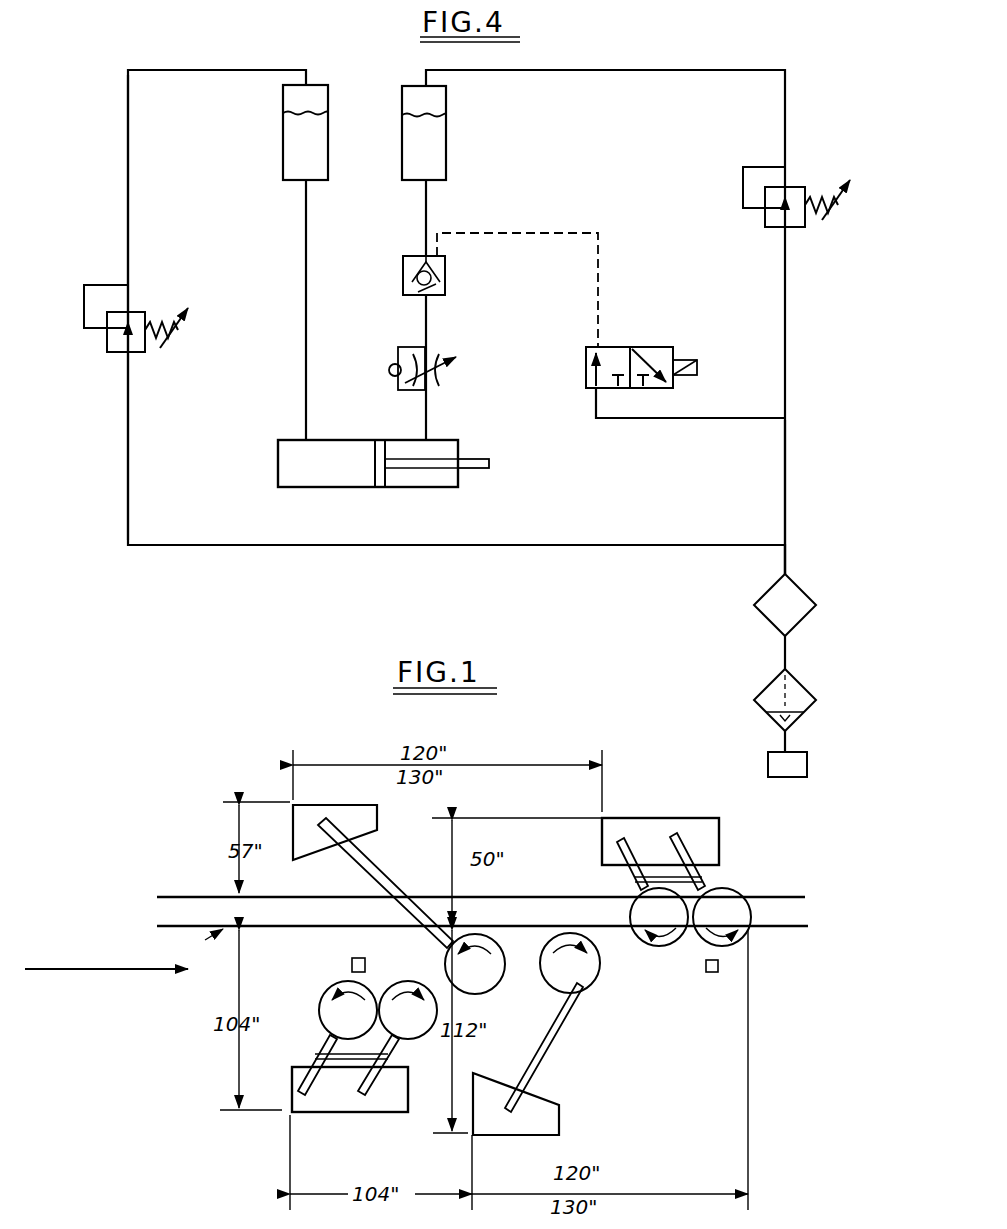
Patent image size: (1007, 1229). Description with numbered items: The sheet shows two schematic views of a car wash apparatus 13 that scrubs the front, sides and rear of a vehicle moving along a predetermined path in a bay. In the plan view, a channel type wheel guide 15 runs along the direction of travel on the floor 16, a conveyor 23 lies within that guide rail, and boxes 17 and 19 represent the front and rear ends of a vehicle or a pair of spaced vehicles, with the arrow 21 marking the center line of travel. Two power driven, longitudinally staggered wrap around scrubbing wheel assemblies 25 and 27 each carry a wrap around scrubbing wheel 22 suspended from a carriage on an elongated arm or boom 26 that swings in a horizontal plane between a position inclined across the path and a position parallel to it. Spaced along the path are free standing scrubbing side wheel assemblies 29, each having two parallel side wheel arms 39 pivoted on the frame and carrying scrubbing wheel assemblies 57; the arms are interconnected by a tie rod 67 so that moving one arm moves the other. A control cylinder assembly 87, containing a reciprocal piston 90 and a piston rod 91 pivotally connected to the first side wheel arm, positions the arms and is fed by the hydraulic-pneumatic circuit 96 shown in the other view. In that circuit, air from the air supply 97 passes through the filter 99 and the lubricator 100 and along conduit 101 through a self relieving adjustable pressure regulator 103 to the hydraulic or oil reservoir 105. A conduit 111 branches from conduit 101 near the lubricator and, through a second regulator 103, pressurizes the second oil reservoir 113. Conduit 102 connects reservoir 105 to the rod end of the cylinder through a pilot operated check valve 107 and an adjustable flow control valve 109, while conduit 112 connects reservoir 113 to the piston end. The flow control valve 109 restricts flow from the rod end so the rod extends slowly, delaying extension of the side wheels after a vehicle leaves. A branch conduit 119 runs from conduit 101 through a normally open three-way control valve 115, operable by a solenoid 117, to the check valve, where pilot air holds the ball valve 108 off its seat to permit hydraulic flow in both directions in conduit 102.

In FIG. 1, the car wash apparatus 13 is at (220, 810).
In FIG. 1, the wheel guide 15 is at (200, 896).
In FIG. 1, the floor 16 is at (205, 851).
In FIG. 1, the vehicle end box 17 is at (716, 995).
In FIG. 1, the vehicle end box 19 is at (352, 965).
In FIG. 1, the arrow 21 is at (185, 983).
In FIG. 1, the wrap around scrubbing wheel 22 is at (483, 985).
In FIG. 1, the conveyor 23 is at (250, 897).
In FIG. 1, the wrap around scrubbing wheel assembly 25 is at (365, 818).
In FIG. 1, the arm or boom 26 is at (390, 885).
In FIG. 1, the wrap around scrubbing wheel assembly 27 is at (567, 1122).
In FIG. 1, the free standing scrubbing side wheel assembly 29 is at (724, 838).
In FIG. 1, the side wheel arm 39 is at (640, 890).
In FIG. 1, the scrubbing wheel assembly 57 is at (744, 936).
In FIG. 1, the tie rod 67 is at (706, 878).
In FIG. 4, the control cylinder assembly 87 is at (348, 490).
In FIG. 4, the piston 90 is at (388, 480).
In FIG. 4, the piston rod 91 is at (475, 470).
In FIG. 4, the hydraulic-pneumatic circuit 96 is at (546, 552).
In FIG. 4, the air supply 97 is at (785, 765).
In FIG. 4, the filter 99 is at (766, 692).
In FIG. 4, the lubricator 100 is at (760, 597).
In FIG. 4, the conduit 101 is at (787, 480).
In FIG. 4, the conduit 102 is at (428, 416).
In FIG. 4, the self relieving adjustable pressure regulator 103 is at (103, 284).
In FIG. 4, the hydraulic or oil reservoir 105 is at (436, 158).
In FIG. 4, the pilot operated check valve 107 is at (403, 271).
In FIG. 4, the ball valve 108 is at (447, 287).
In FIG. 4, the flow control valve 109 is at (410, 347).
In FIG. 4, the conduit 111 is at (130, 468).
In FIG. 4, the conduit 112 is at (306, 370).
In FIG. 4, the second oil reservoir 113 is at (285, 152).
In FIG. 4, the three-way control valve 115 is at (650, 346).
In FIG. 4, the solenoid 117 is at (690, 379).
In FIG. 4, the branch conduit 119 is at (553, 231).